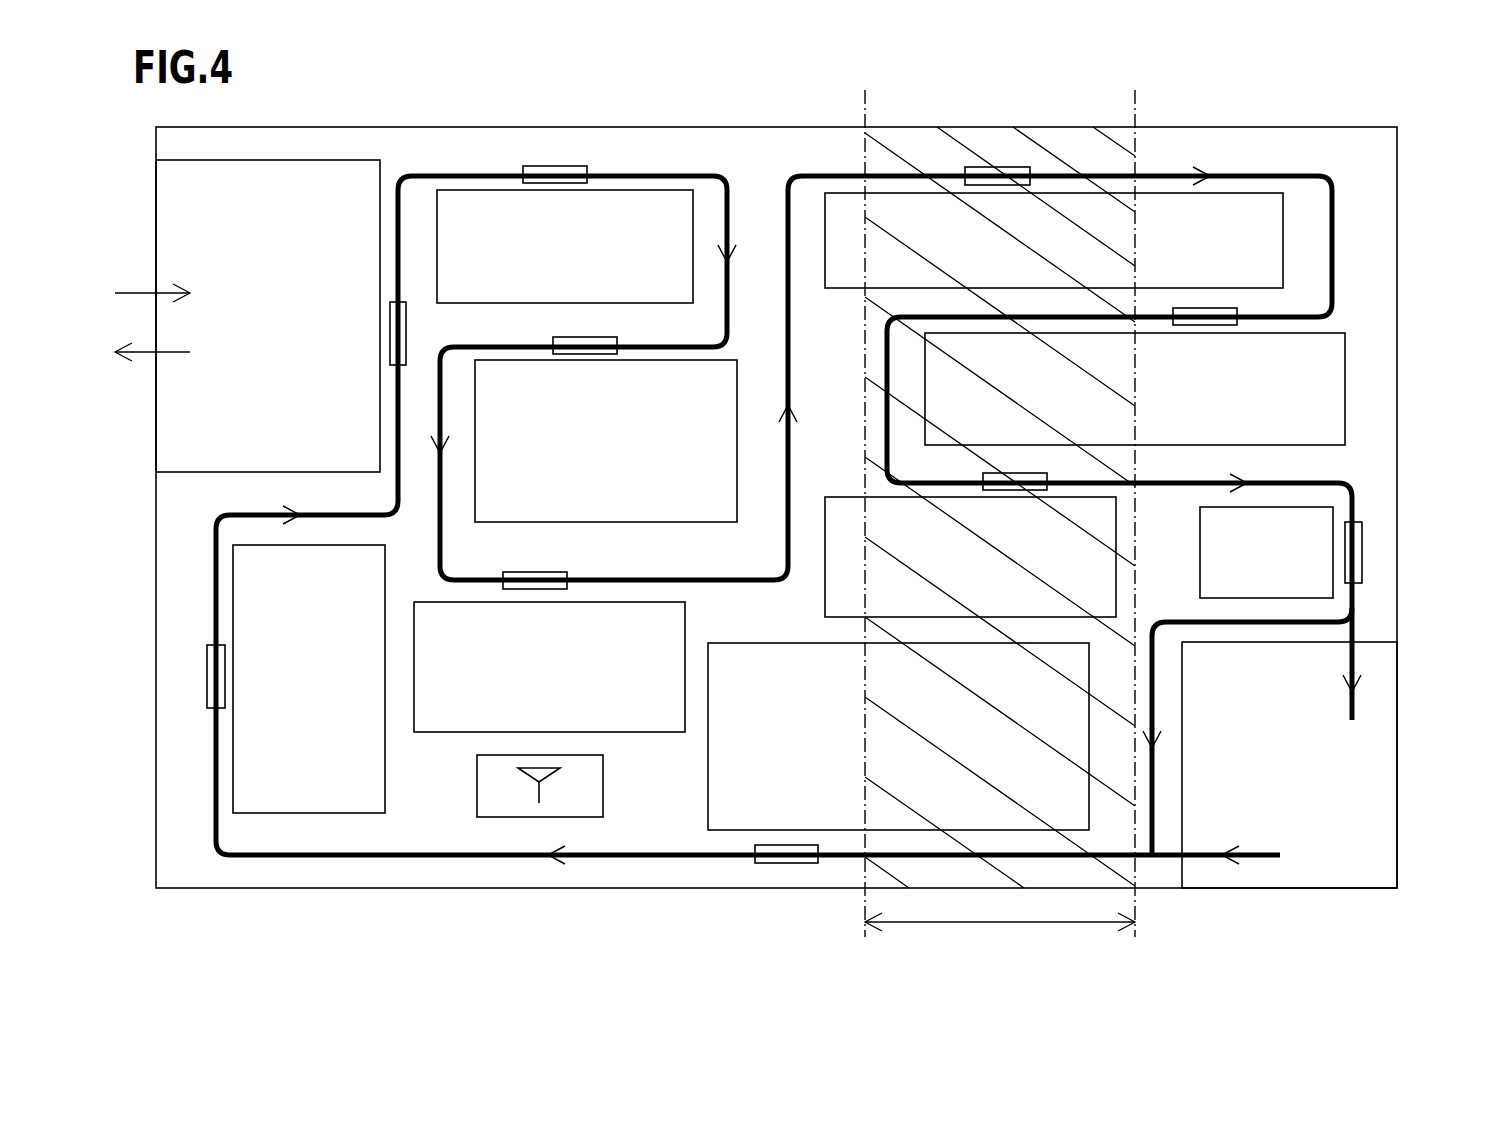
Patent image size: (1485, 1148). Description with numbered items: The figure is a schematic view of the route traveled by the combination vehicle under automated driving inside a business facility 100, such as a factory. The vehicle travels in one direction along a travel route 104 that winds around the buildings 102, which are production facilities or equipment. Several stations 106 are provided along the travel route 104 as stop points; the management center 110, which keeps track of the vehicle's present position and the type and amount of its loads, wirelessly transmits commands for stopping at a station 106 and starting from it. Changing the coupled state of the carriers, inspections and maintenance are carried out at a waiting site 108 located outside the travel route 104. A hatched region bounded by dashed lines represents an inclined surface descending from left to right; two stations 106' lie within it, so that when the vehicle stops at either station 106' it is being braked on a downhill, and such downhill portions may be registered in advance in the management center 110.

The business facility 100 is at (623, 127).
The buildings 102 is at (470, 212).
The travel route 104 is at (652, 857).
The station 106 is at (773, 564).
The station in hatched region 106' is at (1042, 285).
The waiting site 108 is at (1360, 782).
The management center 110 is at (503, 806).